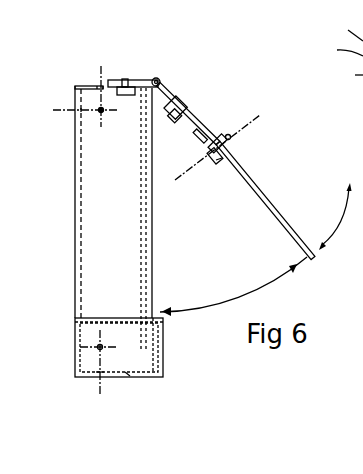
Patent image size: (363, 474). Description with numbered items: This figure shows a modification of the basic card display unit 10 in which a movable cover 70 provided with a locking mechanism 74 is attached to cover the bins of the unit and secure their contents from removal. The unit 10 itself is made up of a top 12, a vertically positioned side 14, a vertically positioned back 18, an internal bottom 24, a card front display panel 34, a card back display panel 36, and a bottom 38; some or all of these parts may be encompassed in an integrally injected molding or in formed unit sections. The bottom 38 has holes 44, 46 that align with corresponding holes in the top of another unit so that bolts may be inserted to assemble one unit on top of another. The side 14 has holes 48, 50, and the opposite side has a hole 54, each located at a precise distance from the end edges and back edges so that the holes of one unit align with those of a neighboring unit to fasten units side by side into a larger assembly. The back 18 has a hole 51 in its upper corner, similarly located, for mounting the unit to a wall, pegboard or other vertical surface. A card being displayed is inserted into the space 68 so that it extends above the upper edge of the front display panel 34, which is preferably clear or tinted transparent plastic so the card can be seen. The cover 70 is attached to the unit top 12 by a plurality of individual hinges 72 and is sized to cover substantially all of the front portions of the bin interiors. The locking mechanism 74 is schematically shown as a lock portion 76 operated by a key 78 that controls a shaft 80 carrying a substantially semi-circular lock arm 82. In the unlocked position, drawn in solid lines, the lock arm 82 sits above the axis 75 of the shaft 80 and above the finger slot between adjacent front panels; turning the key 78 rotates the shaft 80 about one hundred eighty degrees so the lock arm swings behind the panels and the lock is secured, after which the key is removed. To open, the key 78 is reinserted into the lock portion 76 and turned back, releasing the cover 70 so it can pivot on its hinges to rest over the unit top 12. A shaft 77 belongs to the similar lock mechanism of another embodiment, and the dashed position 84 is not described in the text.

The unit 10 is at (115, 71).
The top 12 is at (93, 85).
The side 14 is at (110, 167).
The back 18 is at (75, 193).
The internal bottom 24 is at (348, 25).
The card front display panel 34 is at (163, 348).
The card back display panel 36 is at (147, 350).
The bottom 38 is at (126, 373).
The hole 44 is at (348, 75).
The hole 46 is at (95, 378).
The hole 48 is at (99, 110).
The hole 50 is at (98, 347).
The hole 51 is at (77, 111).
The hole 54 is at (338, 45).
The space 68 is at (160, 312).
The cover 70 is at (283, 212).
The hinge 72 is at (160, 77).
The locking mechanism 74 is at (222, 131).
The axis 75 is at (258, 117).
The lock portion 76 is at (230, 149).
The shaft 77 is at (214, 166).
The key 78 is at (231, 138).
The shaft 80 is at (210, 152).
The lock arm 82 is at (174, 130).
The clamp position 84 is at (224, 158).